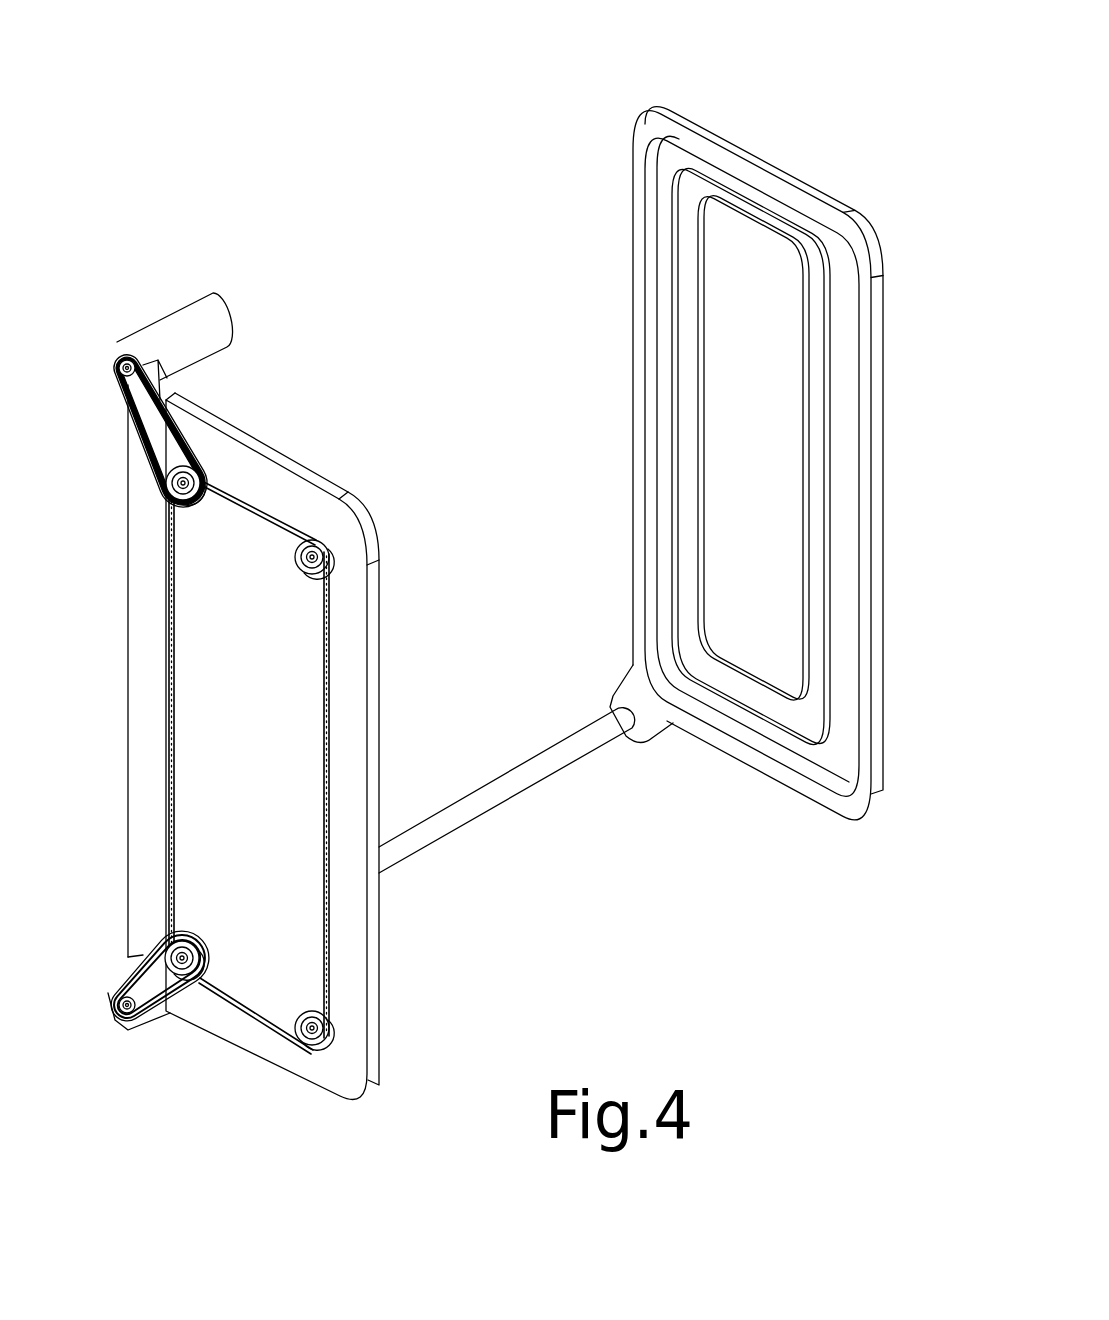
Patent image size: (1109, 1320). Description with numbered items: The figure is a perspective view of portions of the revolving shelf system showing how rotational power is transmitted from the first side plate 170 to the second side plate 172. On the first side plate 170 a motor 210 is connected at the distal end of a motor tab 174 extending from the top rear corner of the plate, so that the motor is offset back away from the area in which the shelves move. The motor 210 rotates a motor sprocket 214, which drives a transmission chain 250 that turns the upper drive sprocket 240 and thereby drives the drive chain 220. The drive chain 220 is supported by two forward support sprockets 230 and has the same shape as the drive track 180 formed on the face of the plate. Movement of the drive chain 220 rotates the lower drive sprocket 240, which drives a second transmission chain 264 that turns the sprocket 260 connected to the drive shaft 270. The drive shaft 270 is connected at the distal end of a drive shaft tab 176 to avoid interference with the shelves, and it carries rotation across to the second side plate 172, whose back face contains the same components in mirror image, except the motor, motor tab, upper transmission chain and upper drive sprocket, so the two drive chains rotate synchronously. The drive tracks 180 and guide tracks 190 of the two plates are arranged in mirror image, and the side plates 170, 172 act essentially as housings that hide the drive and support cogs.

The first side plate 170 is at (350, 977).
The second side plate 172 is at (700, 127).
The motor tab 174 is at (158, 380).
The drive shaft tab 176 is at (114, 977).
The drive track 180 is at (830, 313).
The guide track 190 is at (823, 227).
The motor 210 is at (203, 320).
The motor sprocket 214 is at (120, 365).
The drive chain 220 is at (167, 743).
The support sprocket 230 is at (314, 540).
The drive sprocket 240 is at (208, 481).
The transmission chain 250 is at (140, 442).
The sprocket 260 is at (130, 1020).
The transmission chain 264 is at (143, 957).
The drive shaft 270 is at (520, 777).